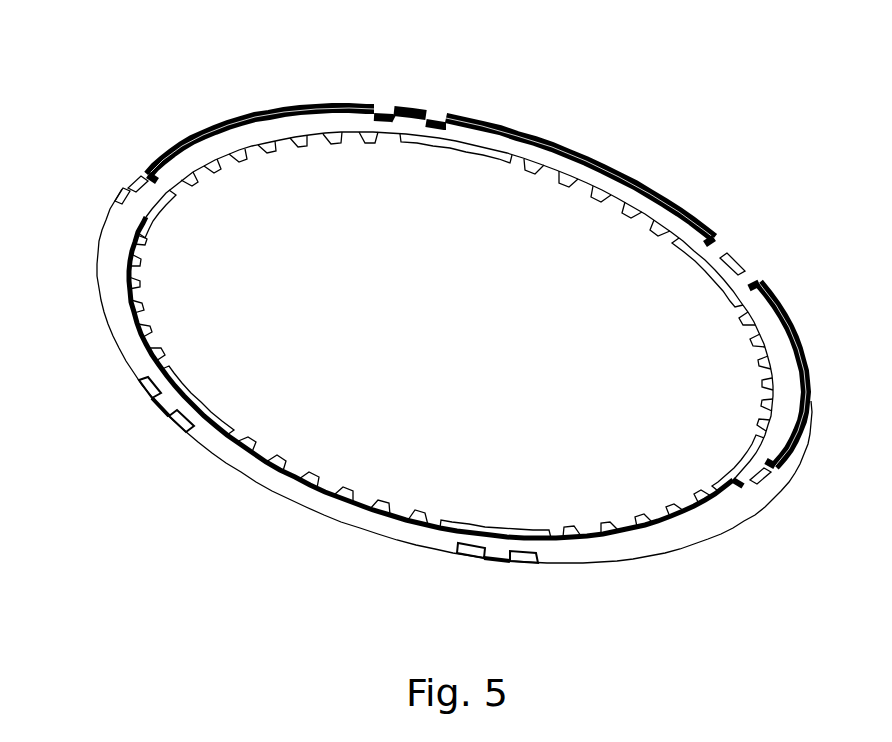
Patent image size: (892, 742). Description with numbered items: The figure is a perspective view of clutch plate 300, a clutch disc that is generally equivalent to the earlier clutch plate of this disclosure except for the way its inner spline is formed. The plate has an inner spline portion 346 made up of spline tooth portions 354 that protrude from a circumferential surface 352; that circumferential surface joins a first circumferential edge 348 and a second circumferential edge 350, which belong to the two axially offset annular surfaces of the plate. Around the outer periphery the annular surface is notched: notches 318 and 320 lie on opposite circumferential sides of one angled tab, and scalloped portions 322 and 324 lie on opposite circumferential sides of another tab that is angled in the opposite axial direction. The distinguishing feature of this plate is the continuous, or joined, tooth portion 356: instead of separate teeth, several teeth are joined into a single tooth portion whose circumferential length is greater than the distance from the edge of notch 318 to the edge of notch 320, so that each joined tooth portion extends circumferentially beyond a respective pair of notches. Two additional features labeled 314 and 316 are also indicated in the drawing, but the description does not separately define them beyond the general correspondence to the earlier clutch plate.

The clutch plate 300 is at (530, 100).
The inner ring portion 314 is at (253, 134).
The outer wall band 316 is at (300, 108).
The notch 318 is at (112, 190).
The notch 320 is at (141, 171).
The scalloped portion 322 is at (383, 106).
The scalloped portion 324 is at (437, 118).
The inner spline portion 346 is at (409, 515).
The circumferential edge 348 is at (310, 486).
The circumferential edge 350 is at (354, 498).
The circumferential surface 352 is at (270, 458).
The spline tooth portions 354 is at (147, 290).
The joined tooth portion 356 is at (215, 396).